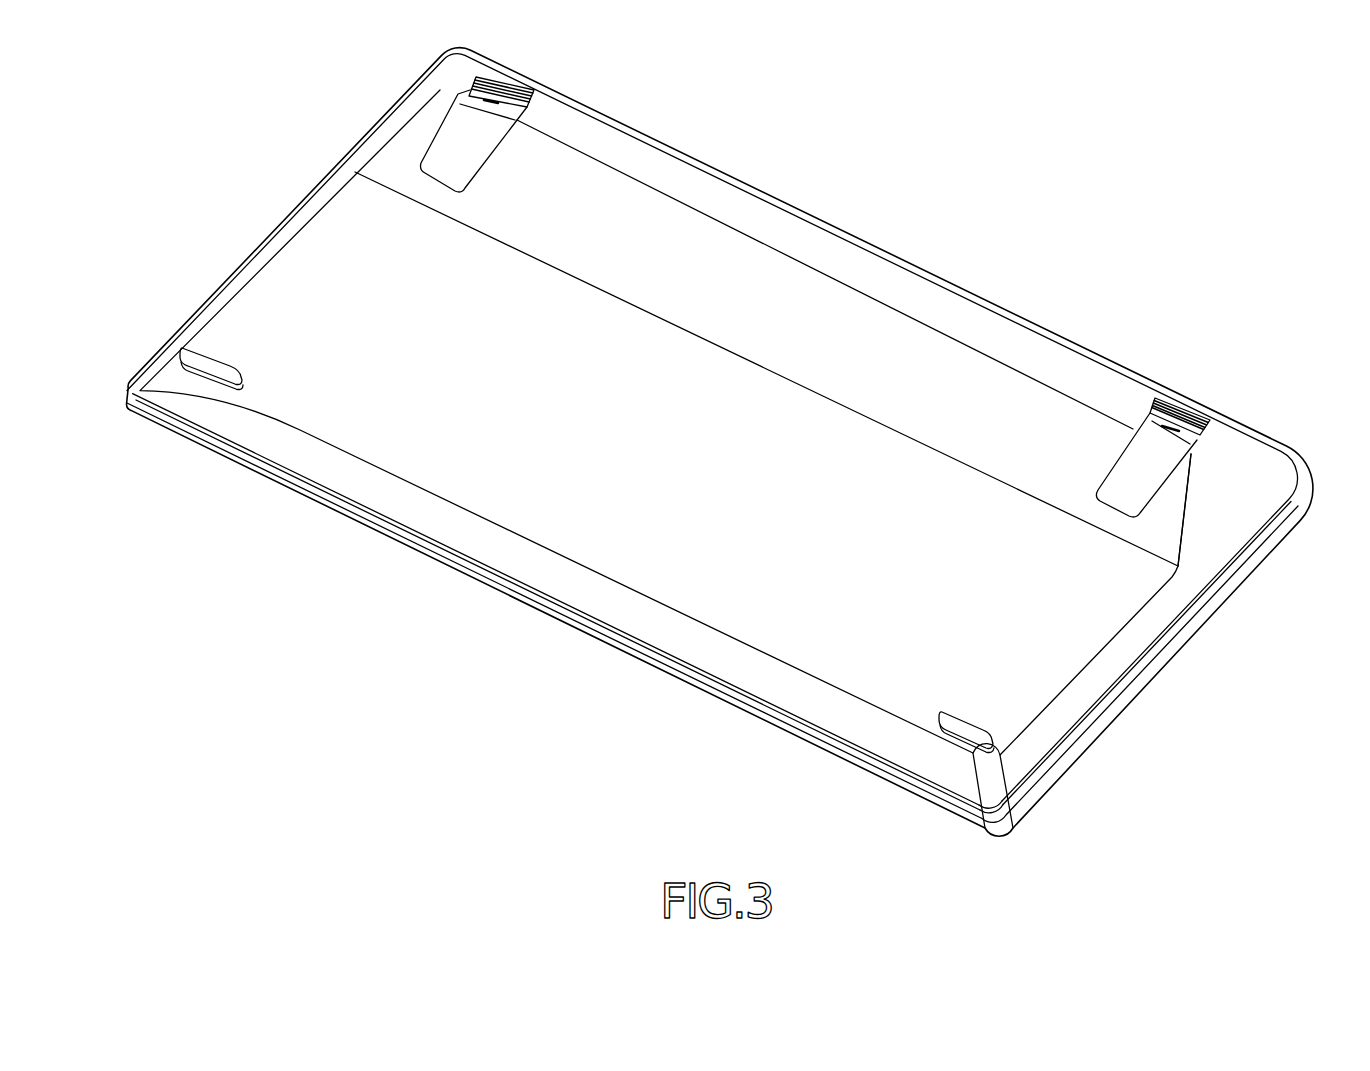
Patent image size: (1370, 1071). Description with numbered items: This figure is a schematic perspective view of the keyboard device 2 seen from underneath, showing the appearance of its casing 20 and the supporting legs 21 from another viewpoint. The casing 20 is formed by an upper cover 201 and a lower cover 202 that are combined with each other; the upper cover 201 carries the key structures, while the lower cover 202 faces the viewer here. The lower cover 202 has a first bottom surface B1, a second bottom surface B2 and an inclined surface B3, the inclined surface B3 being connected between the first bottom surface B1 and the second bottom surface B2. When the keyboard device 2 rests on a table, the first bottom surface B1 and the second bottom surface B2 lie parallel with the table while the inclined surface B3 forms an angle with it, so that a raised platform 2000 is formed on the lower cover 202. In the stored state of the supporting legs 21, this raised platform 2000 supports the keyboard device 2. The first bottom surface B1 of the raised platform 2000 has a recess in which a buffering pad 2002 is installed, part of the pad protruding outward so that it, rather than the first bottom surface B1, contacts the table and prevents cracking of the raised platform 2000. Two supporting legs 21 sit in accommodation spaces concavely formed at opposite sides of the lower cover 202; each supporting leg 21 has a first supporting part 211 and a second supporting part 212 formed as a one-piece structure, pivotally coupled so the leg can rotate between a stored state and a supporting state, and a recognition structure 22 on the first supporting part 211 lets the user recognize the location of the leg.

The keyboard device 2 is at (1089, 182).
The casing 20 is at (244, 521).
The upper cover 201 is at (1207, 613).
The lower cover 202 is at (1130, 647).
The raised platform 2000 is at (972, 383).
The buffering pad 2002 is at (1183, 413).
The supporting leg 21 is at (740, 375).
The first supporting part 211 is at (1183, 440).
The second supporting part 212 is at (1122, 480).
The recognition structure 22 is at (1160, 399).
The first bottom surface B1 is at (589, 126).
The second bottom surface B2 is at (301, 279).
The inclined surface B3 is at (399, 140).